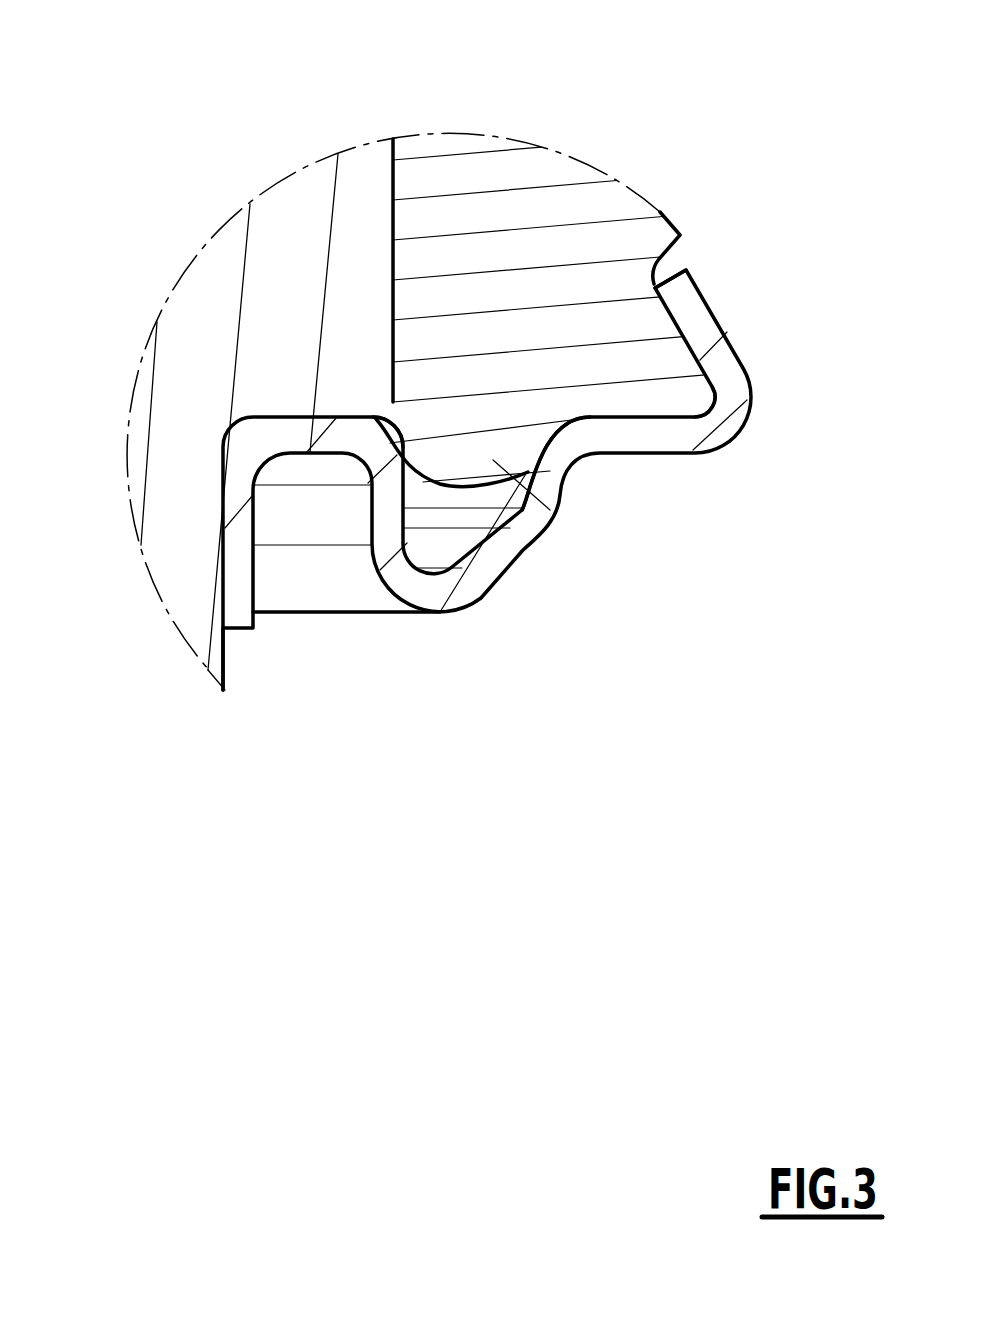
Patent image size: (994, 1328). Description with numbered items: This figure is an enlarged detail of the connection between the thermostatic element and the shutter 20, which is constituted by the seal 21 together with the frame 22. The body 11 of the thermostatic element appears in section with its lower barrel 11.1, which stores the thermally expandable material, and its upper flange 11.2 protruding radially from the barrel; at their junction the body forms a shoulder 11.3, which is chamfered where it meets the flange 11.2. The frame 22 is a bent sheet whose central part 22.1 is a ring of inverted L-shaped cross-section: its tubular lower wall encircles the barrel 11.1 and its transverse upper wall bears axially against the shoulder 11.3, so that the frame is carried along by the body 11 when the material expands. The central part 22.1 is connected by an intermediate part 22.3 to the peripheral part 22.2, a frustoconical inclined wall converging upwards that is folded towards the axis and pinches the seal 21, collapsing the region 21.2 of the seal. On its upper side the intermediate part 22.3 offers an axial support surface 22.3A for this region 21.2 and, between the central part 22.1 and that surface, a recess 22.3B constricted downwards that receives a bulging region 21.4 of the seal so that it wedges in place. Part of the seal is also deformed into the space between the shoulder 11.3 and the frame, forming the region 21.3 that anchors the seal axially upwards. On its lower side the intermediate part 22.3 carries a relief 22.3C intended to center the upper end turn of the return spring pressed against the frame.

The body 11 is at (157, 567).
The lower barrel 11.1 is at (228, 655).
The upper flange 11.2 is at (375, 234).
The shoulder 11.3 is at (235, 553).
The shutter 20 is at (829, 90).
The seal 21 is at (600, 160).
The collapsed region of the seal 21.2 is at (745, 408).
The region of the seal accommodated between shoulder and frame 21.3 is at (385, 412).
The bulging region of the seal 21.4 is at (493, 460).
The frame 22 is at (718, 280).
The central part 22.1 is at (305, 455).
The peripheral part 22.2 is at (697, 312).
The intermediate part 22.3 is at (503, 557).
The axial support surface 22.3A is at (638, 408).
The recess 22.3B is at (522, 460).
The relief 22.3C is at (570, 487).